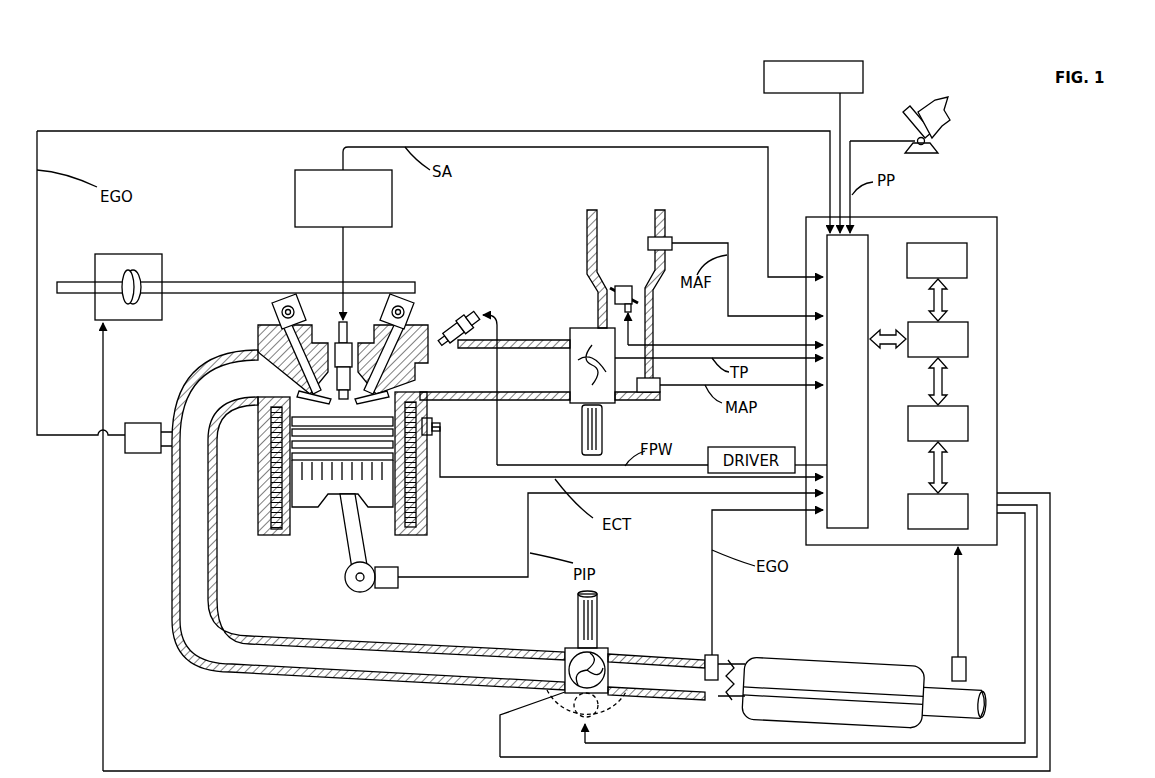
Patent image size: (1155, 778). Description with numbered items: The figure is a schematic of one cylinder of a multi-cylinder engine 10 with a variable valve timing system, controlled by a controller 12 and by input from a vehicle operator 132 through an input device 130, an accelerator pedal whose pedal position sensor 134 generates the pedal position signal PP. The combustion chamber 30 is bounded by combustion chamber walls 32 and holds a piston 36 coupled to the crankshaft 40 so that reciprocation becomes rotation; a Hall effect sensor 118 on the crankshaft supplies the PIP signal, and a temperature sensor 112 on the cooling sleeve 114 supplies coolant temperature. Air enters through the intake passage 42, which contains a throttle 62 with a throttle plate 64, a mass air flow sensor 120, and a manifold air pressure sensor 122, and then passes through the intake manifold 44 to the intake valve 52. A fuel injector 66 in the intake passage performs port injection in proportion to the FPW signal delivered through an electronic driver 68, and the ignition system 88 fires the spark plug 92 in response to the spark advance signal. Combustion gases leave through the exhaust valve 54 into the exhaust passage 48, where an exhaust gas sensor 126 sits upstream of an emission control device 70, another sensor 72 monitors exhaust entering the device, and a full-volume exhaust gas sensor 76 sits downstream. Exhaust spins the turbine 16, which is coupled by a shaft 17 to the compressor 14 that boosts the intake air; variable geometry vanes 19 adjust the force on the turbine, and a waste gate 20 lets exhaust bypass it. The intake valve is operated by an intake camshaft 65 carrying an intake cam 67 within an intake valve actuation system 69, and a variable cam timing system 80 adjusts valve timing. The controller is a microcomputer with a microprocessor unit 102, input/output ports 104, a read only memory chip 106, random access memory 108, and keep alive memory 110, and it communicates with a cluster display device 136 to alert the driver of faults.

The engine 10 is at (104, 116).
The controller 12 is at (990, 217).
The compressor 14 is at (567, 327).
The turbine 16 is at (573, 648).
The shaft 17 is at (600, 638).
The variable geometry vanes 19 is at (597, 693).
The waste gate 20 is at (580, 717).
The combustion chamber 30 is at (362, 511).
The combustion chamber walls 32 is at (293, 523).
The piston 36 is at (343, 487).
The crankshaft 40 is at (353, 592).
The intake passage 42 is at (640, 266).
The intake manifold 44 is at (554, 382).
The exhaust passage 48 is at (246, 388).
The intake valve 52 is at (372, 397).
The exhaust valve 54 is at (302, 394).
The throttle 62 is at (640, 290).
The throttle plate 64 is at (610, 288).
The intake camshaft 65 is at (207, 285).
The fuel injector 66 is at (448, 330).
The intake cam 67 is at (409, 300).
The electronic driver 68 is at (497, 418).
The intake valve actuation system 69 is at (236, 270).
The emission control device 70 is at (892, 660).
The sensor 72 is at (720, 655).
The full-volume exhaust gas sensor 76 is at (965, 658).
The variable cam timing system 80 is at (121, 322).
The ignition system 88 is at (300, 170).
The spark plug 92 is at (348, 342).
The microprocessor unit 102 is at (970, 336).
The input/output ports 104 is at (870, 243).
The read only memory chip 106 is at (968, 262).
The random access memory 108 is at (970, 422).
The keep alive memory 110 is at (970, 508).
The temperature sensor 112 is at (440, 427).
The cooling sleeve 114 is at (423, 495).
The Hall effect sensor 118 is at (390, 590).
The mass air flow sensor 120 is at (663, 237).
The manifold air pressure sensor 122 is at (652, 392).
The exhaust gas sensor 126 is at (125, 430).
The input device 130 is at (903, 121).
The vehicle operator 132 is at (947, 112).
The pedal position sensor 134 is at (930, 142).
The cluster display device 136 is at (764, 78).